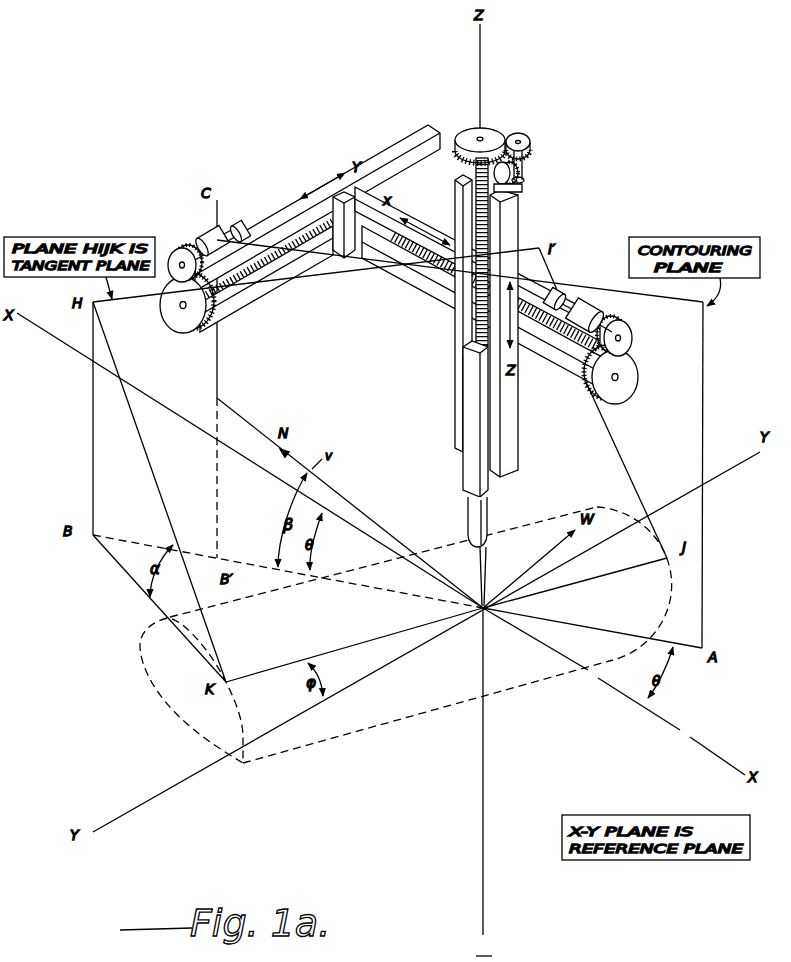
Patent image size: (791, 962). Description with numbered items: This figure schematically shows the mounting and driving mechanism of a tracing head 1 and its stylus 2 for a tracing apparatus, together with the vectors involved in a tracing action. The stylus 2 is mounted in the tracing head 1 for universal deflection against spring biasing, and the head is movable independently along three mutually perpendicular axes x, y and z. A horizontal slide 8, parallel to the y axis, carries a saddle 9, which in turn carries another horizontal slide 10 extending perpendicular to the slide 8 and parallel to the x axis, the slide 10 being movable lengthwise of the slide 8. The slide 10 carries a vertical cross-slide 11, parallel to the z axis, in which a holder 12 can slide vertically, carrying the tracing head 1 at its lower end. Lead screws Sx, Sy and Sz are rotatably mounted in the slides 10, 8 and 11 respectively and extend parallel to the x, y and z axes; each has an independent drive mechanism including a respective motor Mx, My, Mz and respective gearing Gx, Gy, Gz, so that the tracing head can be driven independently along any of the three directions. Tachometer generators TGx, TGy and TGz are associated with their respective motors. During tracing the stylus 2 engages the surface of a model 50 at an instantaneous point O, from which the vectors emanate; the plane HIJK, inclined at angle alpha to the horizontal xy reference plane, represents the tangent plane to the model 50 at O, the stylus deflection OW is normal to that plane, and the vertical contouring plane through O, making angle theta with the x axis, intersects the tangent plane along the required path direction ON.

The tracing head 1 is at (488, 510).
The stylus 2 is at (487, 563).
The horizontal slide 8 is at (253, 293).
The saddle 9 is at (353, 250).
The horizontal slide 10 is at (427, 290).
The vertical cross-slide 11 is at (456, 371).
The holder 12 is at (466, 468).
The model 50 is at (302, 740).
The lead screw Sx is at (598, 338).
The lead screw Sy is at (404, 152).
The lead screw Sz is at (486, 213).
The motor Mx is at (594, 312).
The motor My is at (207, 236).
The motor Mz is at (524, 165).
The gearing Gx is at (634, 348).
The gearing Gy is at (161, 276).
The gearing Gz is at (503, 124).
The tachometer generator TGx is at (557, 290).
The tachometer generator TGy is at (243, 222).
The tachometer generator TGz is at (470, 172).